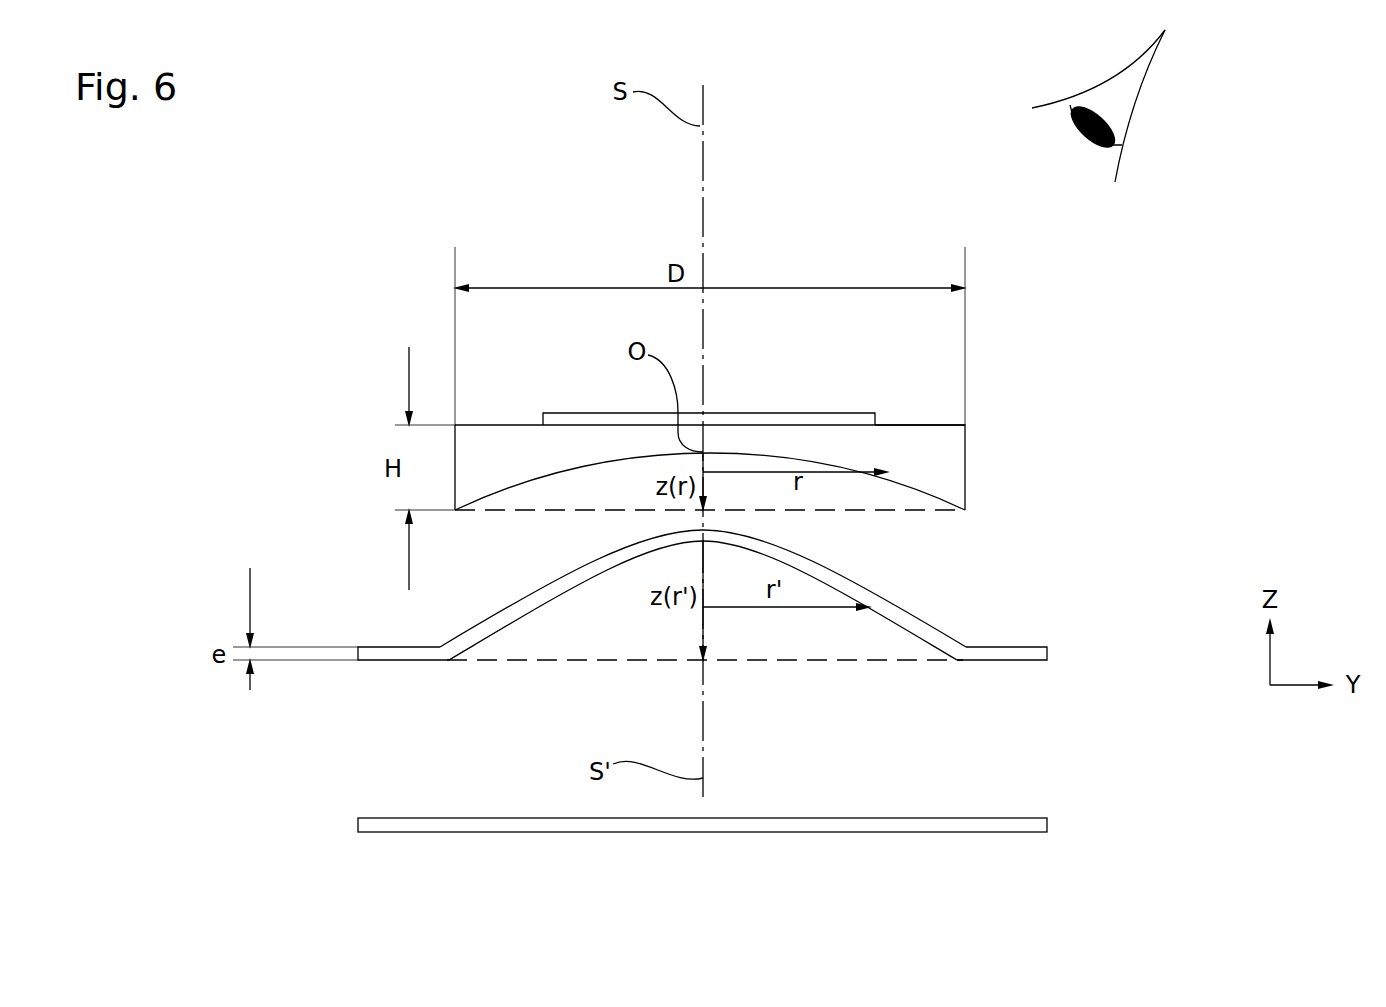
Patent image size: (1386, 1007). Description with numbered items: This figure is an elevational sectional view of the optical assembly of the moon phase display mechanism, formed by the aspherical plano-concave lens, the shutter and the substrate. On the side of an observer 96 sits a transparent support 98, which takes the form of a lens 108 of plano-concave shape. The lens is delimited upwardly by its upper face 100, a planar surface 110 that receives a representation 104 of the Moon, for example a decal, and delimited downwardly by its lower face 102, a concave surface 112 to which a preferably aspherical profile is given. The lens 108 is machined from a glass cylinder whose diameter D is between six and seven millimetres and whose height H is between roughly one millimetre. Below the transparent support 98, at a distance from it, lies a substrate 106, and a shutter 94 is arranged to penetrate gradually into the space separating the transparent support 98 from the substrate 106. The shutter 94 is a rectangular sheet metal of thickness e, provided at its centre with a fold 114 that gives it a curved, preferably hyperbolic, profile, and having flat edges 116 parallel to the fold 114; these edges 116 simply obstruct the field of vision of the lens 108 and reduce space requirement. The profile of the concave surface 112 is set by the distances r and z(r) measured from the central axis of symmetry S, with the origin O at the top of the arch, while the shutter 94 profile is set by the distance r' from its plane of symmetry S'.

The shutter 94 is at (952, 607).
The observer 96 is at (1138, 88).
The transparent support 98 is at (811, 431).
The lens 108 is at (1004, 406).
The upper face 100 is at (688, 291).
The planar surface 110 is at (567, 408).
The lower face 102 is at (710, 579).
The concave surface 112 is at (506, 507).
The representation of the Moon 104 is at (852, 423).
The substrate 106 is at (848, 826).
The fold 114 is at (716, 548).
The flat edges 116 is at (707, 449).